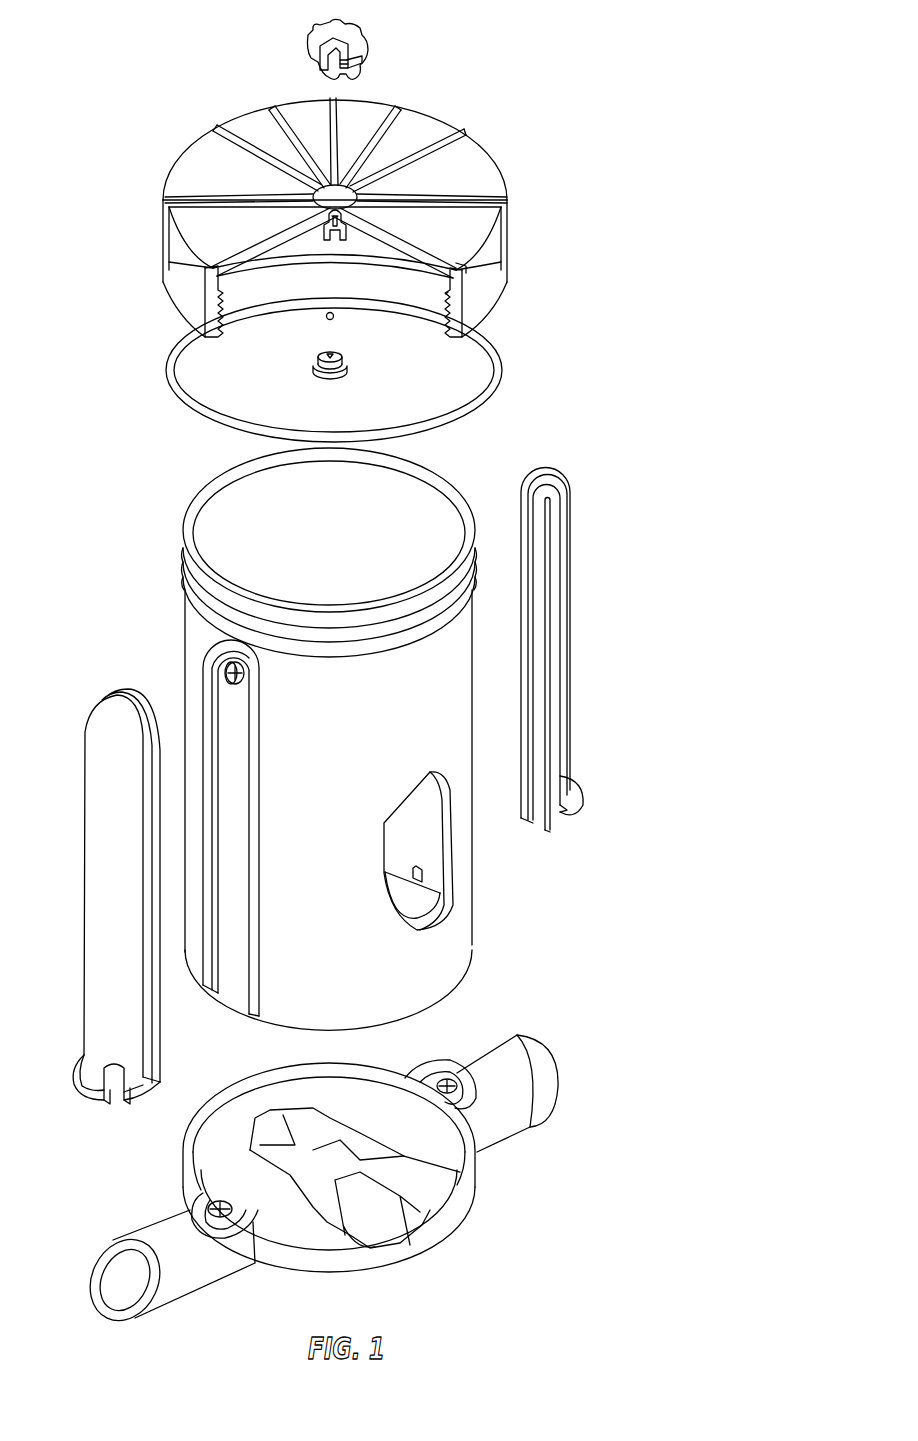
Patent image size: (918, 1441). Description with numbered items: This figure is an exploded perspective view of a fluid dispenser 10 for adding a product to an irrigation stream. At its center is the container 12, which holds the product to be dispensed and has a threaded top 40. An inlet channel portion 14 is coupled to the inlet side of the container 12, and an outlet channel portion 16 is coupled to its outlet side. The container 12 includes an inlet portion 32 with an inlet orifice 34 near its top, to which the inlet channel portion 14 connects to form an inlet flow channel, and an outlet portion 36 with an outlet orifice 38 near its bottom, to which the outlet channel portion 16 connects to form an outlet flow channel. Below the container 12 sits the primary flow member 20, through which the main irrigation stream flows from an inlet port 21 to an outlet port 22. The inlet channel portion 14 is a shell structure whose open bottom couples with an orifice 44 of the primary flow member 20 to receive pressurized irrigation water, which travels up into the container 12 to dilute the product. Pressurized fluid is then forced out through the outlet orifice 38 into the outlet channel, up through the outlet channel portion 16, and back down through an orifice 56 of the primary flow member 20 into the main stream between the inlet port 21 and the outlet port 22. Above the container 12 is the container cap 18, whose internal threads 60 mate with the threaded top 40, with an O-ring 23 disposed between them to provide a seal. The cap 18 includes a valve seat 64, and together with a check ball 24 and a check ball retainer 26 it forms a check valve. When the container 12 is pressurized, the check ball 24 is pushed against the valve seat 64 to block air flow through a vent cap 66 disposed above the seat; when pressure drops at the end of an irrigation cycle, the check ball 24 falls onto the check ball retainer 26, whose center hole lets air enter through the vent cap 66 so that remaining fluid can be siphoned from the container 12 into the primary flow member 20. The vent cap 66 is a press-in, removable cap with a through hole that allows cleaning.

The fluid dispenser 10 is at (562, 99).
The container 12 is at (475, 928).
The inlet channel portion 14 is at (83, 905).
The outlet channel portion 16 is at (572, 622).
The container cap 18 is at (508, 245).
The primary flow member 20 is at (528, 1125).
The inlet port 21 is at (120, 1290).
The outlet port 22 is at (565, 1062).
The O-ring 23 is at (505, 345).
The check ball 24 is at (334, 321).
The check ball retainer 26 is at (316, 368).
The inlet portion 32 is at (236, 722).
The inlet orifice 34 is at (234, 672).
The outlet portion 36 is at (455, 850).
The outlet orifice 38 is at (412, 900).
The threaded top 40 is at (186, 588).
The orifice 44 is at (226, 1208).
The orifice 56 is at (447, 1080).
The internal threads 60 is at (440, 308).
The valve seat 64 is at (333, 240).
The vent cap 66 is at (368, 42).